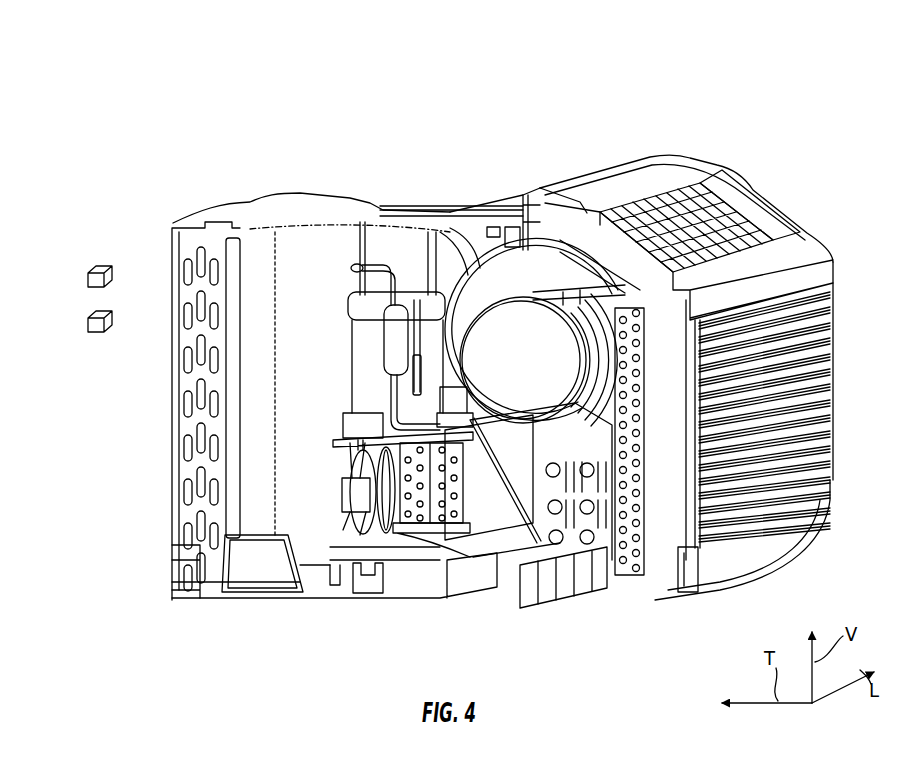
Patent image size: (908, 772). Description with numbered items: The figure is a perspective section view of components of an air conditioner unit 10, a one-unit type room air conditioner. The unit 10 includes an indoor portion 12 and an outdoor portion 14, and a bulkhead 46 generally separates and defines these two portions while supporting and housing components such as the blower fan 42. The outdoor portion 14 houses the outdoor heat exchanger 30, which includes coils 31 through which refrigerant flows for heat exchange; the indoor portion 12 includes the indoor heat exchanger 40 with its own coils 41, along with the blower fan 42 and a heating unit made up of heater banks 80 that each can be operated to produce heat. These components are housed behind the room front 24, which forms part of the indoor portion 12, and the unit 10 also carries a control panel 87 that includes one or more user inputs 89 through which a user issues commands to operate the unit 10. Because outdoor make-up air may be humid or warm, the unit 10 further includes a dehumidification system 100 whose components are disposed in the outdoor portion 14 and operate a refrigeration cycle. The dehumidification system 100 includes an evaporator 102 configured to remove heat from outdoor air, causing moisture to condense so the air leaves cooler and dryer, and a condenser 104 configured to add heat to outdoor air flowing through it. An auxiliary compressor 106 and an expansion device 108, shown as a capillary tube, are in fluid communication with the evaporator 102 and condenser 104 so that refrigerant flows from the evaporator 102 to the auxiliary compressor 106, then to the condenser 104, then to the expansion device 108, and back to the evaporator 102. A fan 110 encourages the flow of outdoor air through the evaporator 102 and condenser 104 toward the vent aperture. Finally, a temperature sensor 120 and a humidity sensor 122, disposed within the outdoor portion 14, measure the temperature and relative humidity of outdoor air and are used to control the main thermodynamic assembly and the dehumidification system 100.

The air conditioner unit 10 is at (506, 141).
The indoor portion 12 is at (552, 620).
The outdoor portion 14 is at (246, 622).
The room front 24 is at (842, 276).
The outdoor heat exchanger 30 is at (180, 236).
The coils 31 is at (181, 266).
The indoor heat exchanger 40 is at (670, 566).
The coils 41 is at (619, 563).
The blower fan 42 is at (531, 340).
The bulkhead 46 is at (494, 250).
The heater banks 80 is at (551, 477).
The control panel 87 is at (792, 216).
The user inputs 89 is at (774, 199).
The dehumidification system 100 is at (326, 319).
The evaporator 102 is at (413, 525).
The condenser 104 is at (444, 527).
The auxiliary compressor 106 is at (356, 297).
The expansion device 108 is at (382, 379).
The fan 110 is at (339, 517).
The temperature sensor 120 is at (84, 272).
The humidity sensor 122 is at (84, 320).